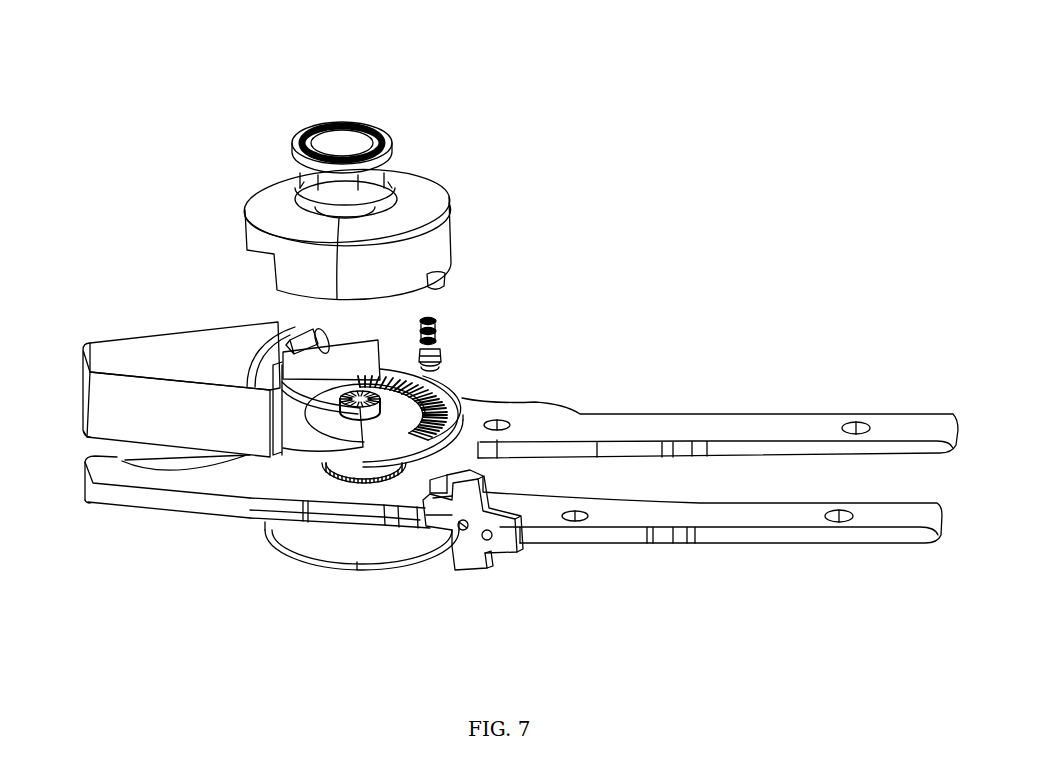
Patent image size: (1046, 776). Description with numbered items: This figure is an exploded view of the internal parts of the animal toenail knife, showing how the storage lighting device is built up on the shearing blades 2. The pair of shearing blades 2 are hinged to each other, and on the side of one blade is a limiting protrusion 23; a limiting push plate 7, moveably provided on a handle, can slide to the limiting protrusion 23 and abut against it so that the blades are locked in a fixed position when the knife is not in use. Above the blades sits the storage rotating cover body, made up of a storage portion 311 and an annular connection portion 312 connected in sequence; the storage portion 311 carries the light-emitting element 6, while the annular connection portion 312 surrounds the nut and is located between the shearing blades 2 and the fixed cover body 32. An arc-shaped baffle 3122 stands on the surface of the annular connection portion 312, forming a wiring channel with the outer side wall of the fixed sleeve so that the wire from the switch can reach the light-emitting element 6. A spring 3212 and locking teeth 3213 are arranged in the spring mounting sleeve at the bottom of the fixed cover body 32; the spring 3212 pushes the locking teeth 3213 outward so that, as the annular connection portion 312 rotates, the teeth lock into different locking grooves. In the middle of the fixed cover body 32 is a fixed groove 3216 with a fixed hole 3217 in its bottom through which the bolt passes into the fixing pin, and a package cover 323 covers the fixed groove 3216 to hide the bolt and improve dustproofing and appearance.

The package cover 323 is at (337, 183).
The fixed groove 3216 is at (388, 192).
The fixed cover body 32 is at (440, 234).
The fixed hole 3217 is at (300, 197).
The storage portion 311 is at (203, 352).
The light-emitting element 6 is at (300, 338).
The spring 3212 is at (443, 318).
The locking teeth 3213 is at (450, 362).
The annular connection portion 312 is at (467, 395).
The arc-shaped baffle 3122 is at (307, 420).
The shearing blades 2 is at (298, 482).
The limiting protrusion 23 is at (422, 505).
The limiting push plate 7 is at (483, 565).